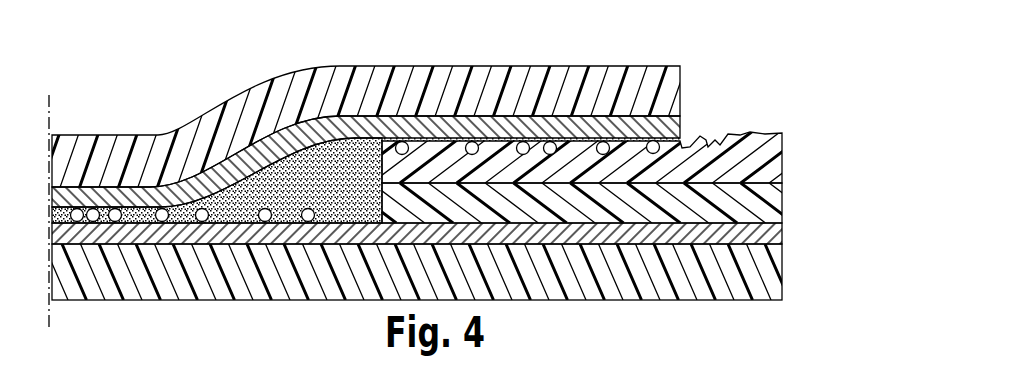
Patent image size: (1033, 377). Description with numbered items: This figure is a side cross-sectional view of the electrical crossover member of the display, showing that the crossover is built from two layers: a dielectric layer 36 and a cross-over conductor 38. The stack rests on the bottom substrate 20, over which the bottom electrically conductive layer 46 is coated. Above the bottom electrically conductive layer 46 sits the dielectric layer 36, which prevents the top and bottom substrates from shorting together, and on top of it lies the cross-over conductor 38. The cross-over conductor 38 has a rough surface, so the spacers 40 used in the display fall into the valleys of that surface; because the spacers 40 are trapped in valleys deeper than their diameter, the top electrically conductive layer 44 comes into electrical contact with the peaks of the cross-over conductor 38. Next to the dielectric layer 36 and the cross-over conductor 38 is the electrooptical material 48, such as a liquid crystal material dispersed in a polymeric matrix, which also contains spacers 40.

The bottom substrate 20 is at (762, 277).
The dielectric layer 36 is at (765, 203).
The cross-over conductor 38 is at (772, 158).
The spacers 40 is at (162, 209).
The top electrically conductive layer 44 is at (570, 130).
The bottom electrically conductive layer 46 is at (750, 233).
The electrooptical material 48 is at (353, 170).